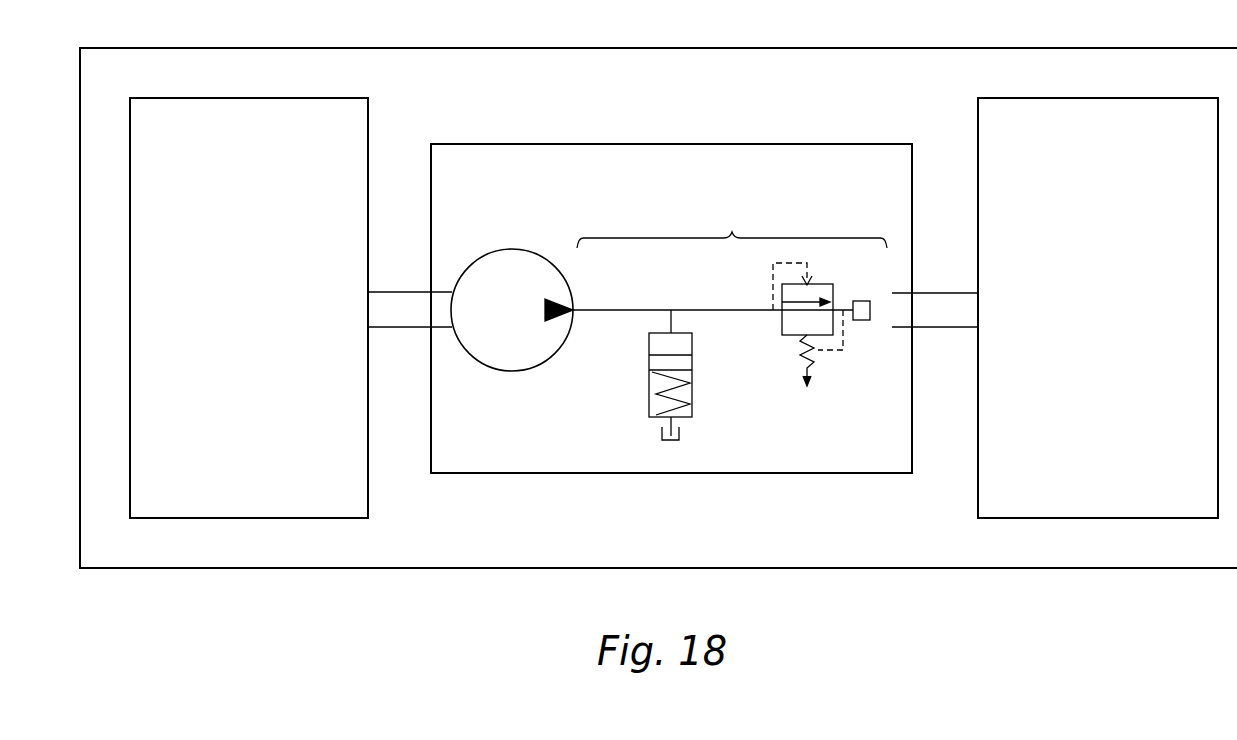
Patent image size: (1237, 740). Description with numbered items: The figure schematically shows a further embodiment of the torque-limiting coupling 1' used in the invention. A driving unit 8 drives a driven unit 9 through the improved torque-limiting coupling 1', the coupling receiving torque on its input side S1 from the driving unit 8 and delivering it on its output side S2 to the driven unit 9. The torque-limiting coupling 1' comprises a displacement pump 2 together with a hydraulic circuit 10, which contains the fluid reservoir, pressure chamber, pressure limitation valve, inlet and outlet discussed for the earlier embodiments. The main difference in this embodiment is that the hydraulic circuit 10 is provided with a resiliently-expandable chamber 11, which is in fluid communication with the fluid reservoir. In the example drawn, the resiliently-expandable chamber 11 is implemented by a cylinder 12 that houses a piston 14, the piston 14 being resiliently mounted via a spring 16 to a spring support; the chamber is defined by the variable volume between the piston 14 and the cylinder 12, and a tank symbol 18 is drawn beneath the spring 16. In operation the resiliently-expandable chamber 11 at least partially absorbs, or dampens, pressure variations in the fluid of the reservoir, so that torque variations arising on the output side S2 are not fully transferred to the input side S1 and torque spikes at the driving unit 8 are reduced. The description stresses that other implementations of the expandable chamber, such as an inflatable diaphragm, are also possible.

The torque-limiting coupling 1' is at (671, 273).
The displacement pump 2 is at (502, 322).
The driving unit 8 is at (254, 329).
The driven unit 9 is at (1108, 329).
The hydraulic circuit 10 is at (731, 236).
The resiliently-expandable chamber 11 is at (684, 363).
The cylinder 12 is at (660, 345).
The piston 14 is at (664, 362).
The spring 16 is at (680, 396).
The tank 18 is at (682, 434).
The input side S1 is at (414, 276).
The output side S2 is at (931, 277).